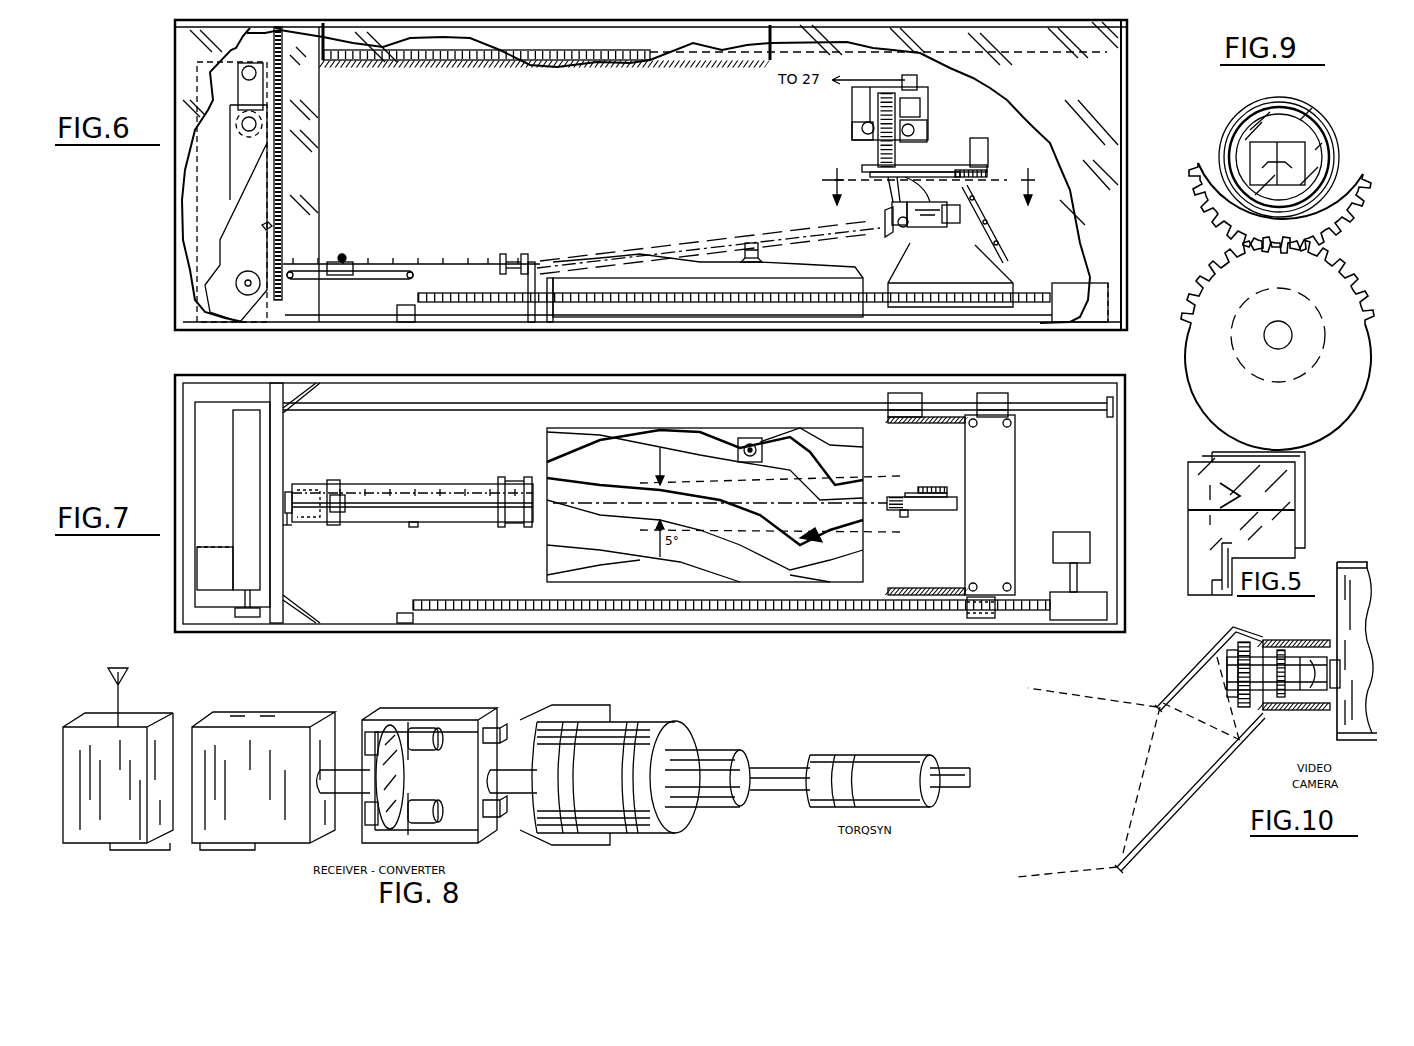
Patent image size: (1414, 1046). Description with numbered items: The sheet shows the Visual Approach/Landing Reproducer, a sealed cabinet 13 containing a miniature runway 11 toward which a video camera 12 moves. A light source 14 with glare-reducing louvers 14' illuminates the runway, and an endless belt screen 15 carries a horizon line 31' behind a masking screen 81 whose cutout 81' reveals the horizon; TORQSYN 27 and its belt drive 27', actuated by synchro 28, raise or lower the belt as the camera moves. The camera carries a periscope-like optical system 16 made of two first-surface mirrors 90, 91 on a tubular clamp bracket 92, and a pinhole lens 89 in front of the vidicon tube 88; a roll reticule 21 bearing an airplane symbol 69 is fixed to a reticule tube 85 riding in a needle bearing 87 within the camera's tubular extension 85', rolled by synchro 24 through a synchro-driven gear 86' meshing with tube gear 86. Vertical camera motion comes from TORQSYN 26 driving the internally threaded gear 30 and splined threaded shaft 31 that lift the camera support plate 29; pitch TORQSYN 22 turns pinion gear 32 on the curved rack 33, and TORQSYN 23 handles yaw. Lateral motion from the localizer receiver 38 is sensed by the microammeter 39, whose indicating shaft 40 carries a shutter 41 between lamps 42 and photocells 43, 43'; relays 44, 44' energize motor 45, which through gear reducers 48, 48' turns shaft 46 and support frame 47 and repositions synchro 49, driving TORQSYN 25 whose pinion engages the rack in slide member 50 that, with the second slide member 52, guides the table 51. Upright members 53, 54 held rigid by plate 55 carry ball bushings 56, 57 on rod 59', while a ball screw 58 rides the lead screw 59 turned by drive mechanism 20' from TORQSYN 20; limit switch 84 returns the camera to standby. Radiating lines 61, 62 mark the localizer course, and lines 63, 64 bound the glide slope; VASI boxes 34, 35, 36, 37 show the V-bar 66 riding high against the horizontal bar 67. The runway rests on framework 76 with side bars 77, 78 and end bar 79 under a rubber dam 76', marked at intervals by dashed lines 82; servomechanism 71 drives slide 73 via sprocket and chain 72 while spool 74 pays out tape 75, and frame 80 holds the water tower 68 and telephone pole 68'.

In FIG. 7, the miniature runway 11 is at (533, 510).
In FIG. 6, the video camera 12 is at (920, 227).
In FIG. 10, the video camera 12 is at (1337, 732).
In FIG. 6, the cabinet 13 is at (1121, 118).
In FIG. 6, the light source 14 is at (714, 55).
In FIG. 6, the louvers 14' is at (494, 75).
In FIG. 6, the endless belt screen 15 is at (228, 205).
In FIG. 7, the endless belt screen 15 is at (233, 530).
In FIG. 6, the optical system 16 is at (885, 220).
In FIG. 7, the optical system 16 is at (915, 511).
In FIG. 10, the optical system 16 is at (1122, 755).
In FIG. 6, the TORQSYN remote positioner 20 is at (1080, 290).
In FIG. 7, the TORQSYN remote positioner 20 is at (1071, 551).
In FIG. 8, the TORQSYN remote positioner 20 is at (888, 728).
In FIG. 7, the drive mechanism 20' is at (1080, 595).
In FIG. 9, the roll reticule 21 is at (1235, 184).
In FIG. 10, the roll reticule 21 is at (1318, 657).
In FIG. 6, the TORQSYN for pitch control 22 is at (951, 228).
In FIG. 6, the TORQSYN for yaw control 23 is at (982, 144).
In FIG. 6, the TORQSYN for roll control 24 is at (903, 227).
In FIG. 7, the TORQSYN for roll control 24 is at (915, 518).
In FIG. 9, the TORQSYN for roll control 24 is at (1240, 320).
In FIG. 6, the TORQSYN unit for lateral drive 25 is at (858, 114).
In FIG. 6, the TORQSYN unit for vertical drive 26 is at (915, 105).
In FIG. 6, the TORQSYN for endless belt 27 is at (208, 192).
In FIG. 7, the TORQSYN for endless belt 27 is at (228, 578).
In FIG. 6, the TORQSYN belt drive connection 27' is at (253, 89).
In FIG. 6, the synchro 28 is at (909, 72).
In FIG. 6, the camera support plate 29 is at (917, 163).
In FIG. 6, the internally threaded gear 30 is at (870, 130).
In FIG. 6, the splined and threaded shaft 31 is at (876, 111).
In FIG. 6, the horizon line 31' is at (256, 225).
In FIG. 7, the pinion gear 32 is at (936, 484).
In FIG. 6, the curved rack 33 is at (903, 189).
In FIG. 7, the curved rack 33 is at (930, 487).
In FIG. 6, the visual approach slope indicator box 34 is at (527, 254).
In FIG. 7, the visual approach slope indicator box 34 is at (528, 527).
In FIG. 5, the visual approach slope indicator box 34 is at (1188, 470).
In FIG. 6, the visual approach slope indicator box 35 is at (502, 254).
In FIG. 7, the visual approach slope indicator box 35 is at (500, 527).
In FIG. 5, the visual approach slope indicator box 35 is at (1212, 452).
In FIG. 7, the visual approach slope indicator box 36 is at (530, 477).
In FIG. 7, the visual approach slope indicator box 37 is at (499, 480).
In FIG. 8, the localizer receiver 38 is at (165, 715).
In FIG. 8, the zero-center microammeter 39 is at (232, 720).
In FIG. 8, the indicating shaft 40 is at (378, 780).
In FIG. 8, the shutter 41 is at (362, 770).
In FIG. 8, the lamp 42 is at (365, 741).
In FIG. 8, the photocell 43 is at (436, 742).
In FIG. 8, the photocell 43' is at (438, 808).
In FIG. 8, the relay 44 is at (501, 723).
In FIG. 8, the relay 44' is at (504, 805).
In FIG. 8, the electric motor 45 is at (620, 730).
In FIG. 8, the shaft 46 is at (508, 775).
In FIG. 8, the support frame 47 is at (437, 708).
In FIG. 8, the gear reducer 48 is at (559, 716).
In FIG. 8, the gear reducer 48' is at (664, 712).
In FIG. 8, the synchro 49 is at (737, 767).
In FIG. 6, the slide member 50 is at (851, 128).
In FIG. 6, the table 51 is at (915, 128).
In FIG. 6, the second slide member 52 is at (925, 131).
In FIG. 6, the upright member 53 is at (935, 150).
In FIG. 7, the upright member 53 is at (923, 428).
In FIG. 6, the upright member 54 is at (998, 270).
In FIG. 7, the upright member 54 is at (896, 588).
In FIG. 6, the plate 55 is at (996, 230).
In FIG. 7, the plate 55 is at (1005, 540).
In FIG. 7, the ball bushing 56 is at (905, 393).
In FIG. 7, the ball bushing 57 is at (990, 393).
In FIG. 7, the ball screw 58 is at (975, 618).
In FIG. 6, the lead screw 59 is at (734, 306).
In FIG. 7, the lead screw 59 is at (731, 623).
In FIG. 7, the rod 59' is at (1092, 411).
In FIG. 7, the radiating line 61 is at (770, 504).
In FIG. 7, the radiating line 62 is at (705, 505).
In FIG. 6, the glide slope envelope boundary line 63 is at (705, 241).
In FIG. 6, the glide slope envelope boundary line 64 is at (705, 249).
In FIG. 5, the V-bar 66 is at (1220, 492).
In FIG. 5, the horizontal bar 67 is at (1195, 511).
In FIG. 6, the water tower 68 is at (743, 243).
In FIG. 7, the water tower 68 is at (736, 451).
In FIG. 6, the telephone pole 68' is at (708, 248).
In FIG. 7, the telephone pole 68' is at (588, 552).
In FIG. 9, the airplane symbol 69 is at (1262, 166).
In FIG. 7, the TORQSYN servomechanism 71 is at (288, 492).
In FIG. 7, the sprocket and chain mechanism 72 is at (297, 528).
In FIG. 7, the slide 73 is at (338, 484).
In FIG. 6, the spool 74 is at (336, 262).
In FIG. 7, the spool 74 is at (340, 512).
In FIG. 7, the tape 75 is at (310, 490).
In FIG. 6, the framework 76 is at (529, 292).
In FIG. 7, the thin rubber dam element 76' is at (386, 475).
In FIG. 6, the side bar 77 is at (415, 268).
In FIG. 7, the side bar 77 is at (428, 531).
In FIG. 7, the side bar 78 is at (416, 488).
In FIG. 7, the end bar 79 is at (300, 484).
In FIG. 6, the frame 80 is at (665, 258).
In FIG. 7, the frame 80 is at (547, 560).
In FIG. 6, the masking screen 81 is at (307, 174).
In FIG. 7, the masking screen 81 is at (295, 503).
In FIG. 6, the cutout 81' is at (322, 156).
In FIG. 6, the dashed lines 82 is at (440, 258).
In FIG. 7, the dashed lines 82 is at (460, 492).
In FIG. 6, the limit switch 84 is at (397, 314).
In FIG. 7, the limit switch 84 is at (410, 623).
In FIG. 6, the reticule tube 85 is at (882, 207).
In FIG. 9, the reticule tube 85 is at (1243, 154).
In FIG. 10, the reticule tube 85 is at (1216, 673).
In FIG. 10, the tubular extension 85' is at (1262, 689).
In FIG. 9, the synchro tube gear 86 is at (1280, 208).
In FIG. 10, the synchro tube gear 86 is at (1226, 678).
In FIG. 9, the synchro-driven gear 86' is at (1374, 270).
In FIG. 9, the needle bearing 87 is at (1226, 204).
In FIG. 10, the needle bearing 87 is at (1280, 640).
In FIG. 10, the vidicon tube 88 is at (1312, 700).
In FIG. 10, the pinhole lens 89 is at (1300, 700).
In FIG. 10, the first-surface mirror 90 is at (1170, 700).
In FIG. 10, the first-surface mirror 91 is at (1190, 798).
In FIG. 10, the tubular clamp bracket 92 is at (1305, 640).